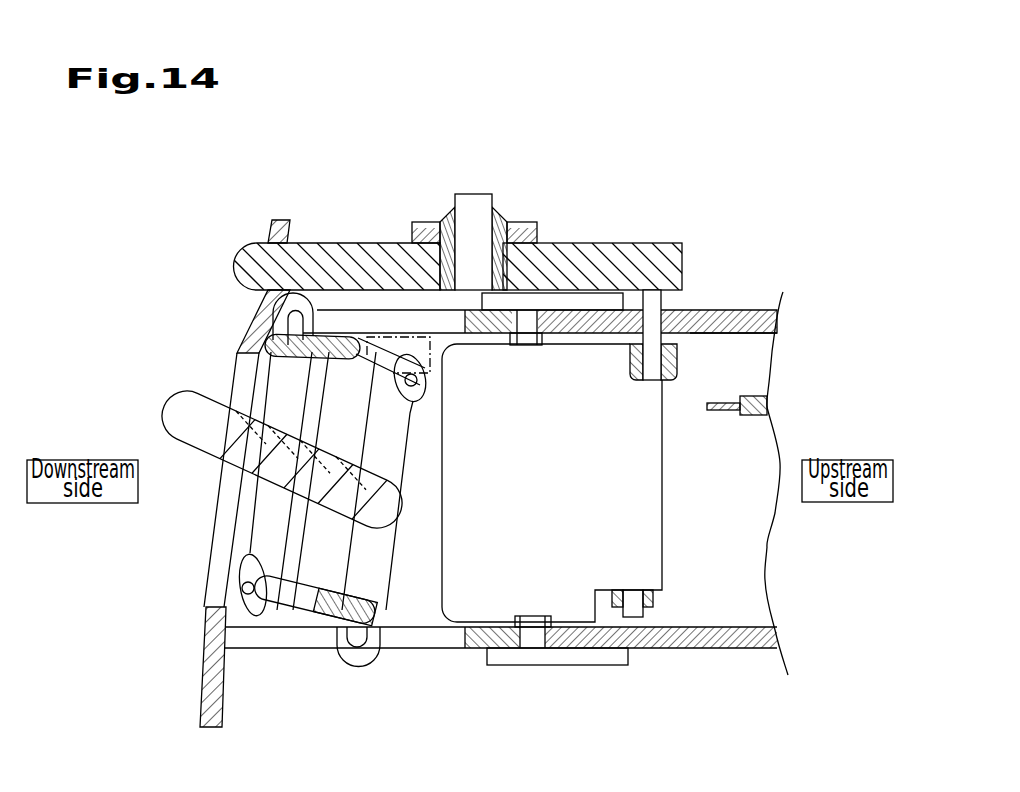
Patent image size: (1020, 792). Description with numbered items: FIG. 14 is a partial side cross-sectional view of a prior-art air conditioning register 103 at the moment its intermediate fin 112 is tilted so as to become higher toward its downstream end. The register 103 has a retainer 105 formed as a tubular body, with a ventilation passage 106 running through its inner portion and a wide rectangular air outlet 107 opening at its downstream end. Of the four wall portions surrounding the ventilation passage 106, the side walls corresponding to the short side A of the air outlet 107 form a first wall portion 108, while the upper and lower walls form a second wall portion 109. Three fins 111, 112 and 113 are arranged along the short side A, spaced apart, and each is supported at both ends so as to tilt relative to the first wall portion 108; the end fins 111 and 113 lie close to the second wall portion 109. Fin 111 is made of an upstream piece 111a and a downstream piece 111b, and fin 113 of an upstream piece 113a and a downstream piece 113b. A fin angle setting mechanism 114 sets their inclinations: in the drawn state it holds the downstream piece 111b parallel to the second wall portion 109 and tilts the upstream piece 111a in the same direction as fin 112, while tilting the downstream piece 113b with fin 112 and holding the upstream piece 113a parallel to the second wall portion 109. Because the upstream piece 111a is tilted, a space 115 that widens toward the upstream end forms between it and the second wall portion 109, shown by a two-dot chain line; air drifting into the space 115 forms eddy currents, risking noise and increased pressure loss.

The air conditioning register 103 is at (541, 692).
The retainer 105 is at (722, 312).
The ventilation passage 106 is at (747, 333).
The air outlet 107 is at (207, 605).
The first wall portion 108 is at (740, 555).
The second wall portion 109 is at (775, 318).
The fin 111 is at (342, 365).
The upstream piece 111a is at (432, 416).
The downstream piece 111b is at (245, 357).
The fin 112 is at (400, 512).
The fin 113 is at (312, 608).
The upstream piece 113a is at (390, 650).
The downstream piece 113b is at (277, 628).
The fin angle setting mechanism 114 is at (426, 551).
The space 115 is at (428, 352).
The short side A is at (215, 530).